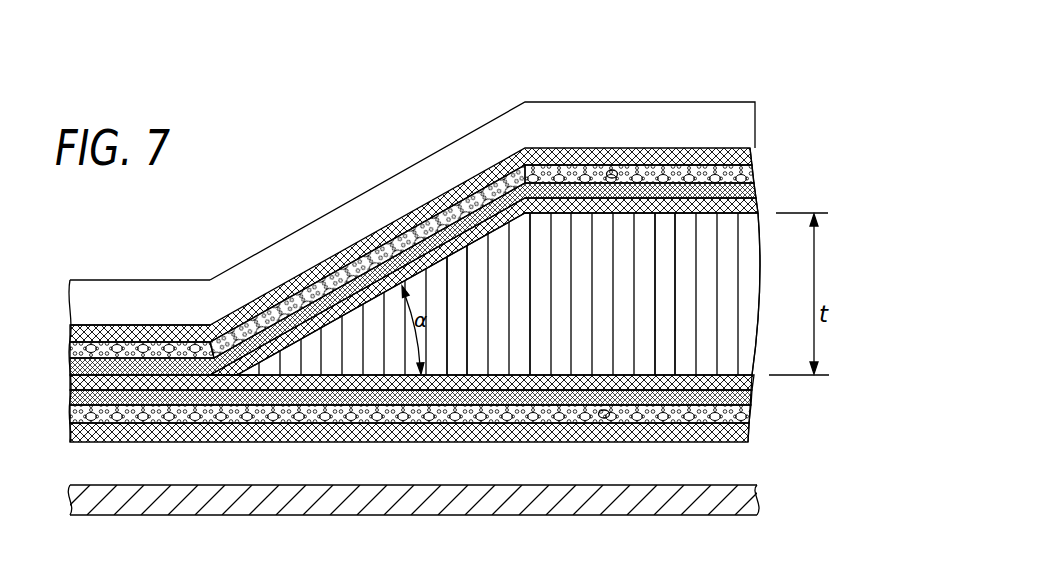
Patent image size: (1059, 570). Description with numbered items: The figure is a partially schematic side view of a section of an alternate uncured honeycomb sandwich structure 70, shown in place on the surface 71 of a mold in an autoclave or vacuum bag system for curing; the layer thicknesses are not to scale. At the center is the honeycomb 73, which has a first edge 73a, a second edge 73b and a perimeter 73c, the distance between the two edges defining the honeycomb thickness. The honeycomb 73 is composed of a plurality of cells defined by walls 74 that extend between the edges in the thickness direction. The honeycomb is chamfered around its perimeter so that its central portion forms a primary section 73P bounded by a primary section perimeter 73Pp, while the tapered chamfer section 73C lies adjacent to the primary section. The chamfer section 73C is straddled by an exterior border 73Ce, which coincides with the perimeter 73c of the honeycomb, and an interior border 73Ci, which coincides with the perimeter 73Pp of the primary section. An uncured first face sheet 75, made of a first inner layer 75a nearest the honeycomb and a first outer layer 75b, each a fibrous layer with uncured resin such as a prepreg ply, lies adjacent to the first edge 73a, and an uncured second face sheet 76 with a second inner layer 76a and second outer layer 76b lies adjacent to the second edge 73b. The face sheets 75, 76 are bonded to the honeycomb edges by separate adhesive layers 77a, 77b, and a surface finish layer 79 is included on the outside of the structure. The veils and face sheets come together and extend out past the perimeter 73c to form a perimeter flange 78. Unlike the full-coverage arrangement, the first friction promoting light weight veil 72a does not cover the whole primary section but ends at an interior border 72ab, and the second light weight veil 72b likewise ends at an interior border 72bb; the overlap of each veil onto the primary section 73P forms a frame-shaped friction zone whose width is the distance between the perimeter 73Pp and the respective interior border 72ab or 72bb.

The uncured honeycomb sandwich structure 70 is at (322, 168).
The surface of a mold 71 is at (742, 484).
The light weight veil 72a is at (748, 182).
The interior border of the veil 72ab is at (607, 172).
The light weight veil 72b is at (746, 414).
The interior border of the veil 72bb is at (601, 417).
The honeycomb 73 is at (738, 272).
The chamfer section 73C is at (478, 310).
The primary section 73P is at (638, 294).
The first edge 73a is at (683, 215).
The second edge 73b is at (625, 374).
The perimeter 73c is at (262, 375).
The exterior border of the chamfer section 73Ce is at (262, 374).
The interior border of the chamfer section 73Ci is at (530, 348).
The primary section perimeter 73Pp is at (530, 238).
The walls 74 is at (748, 294).
The uncured first face sheet 75 is at (447, 179).
The first inner layer 75a is at (752, 195).
The first outer layer 75b is at (740, 165).
The uncured second face sheet 76 is at (454, 491).
The second inner layer 76a is at (745, 398).
The second outer layer 76b is at (736, 443).
The adhesive layer 77a is at (758, 212).
The adhesive layer 77b is at (748, 343).
The perimeter flange 78 is at (114, 312).
The surface finish layer 79 is at (543, 102).